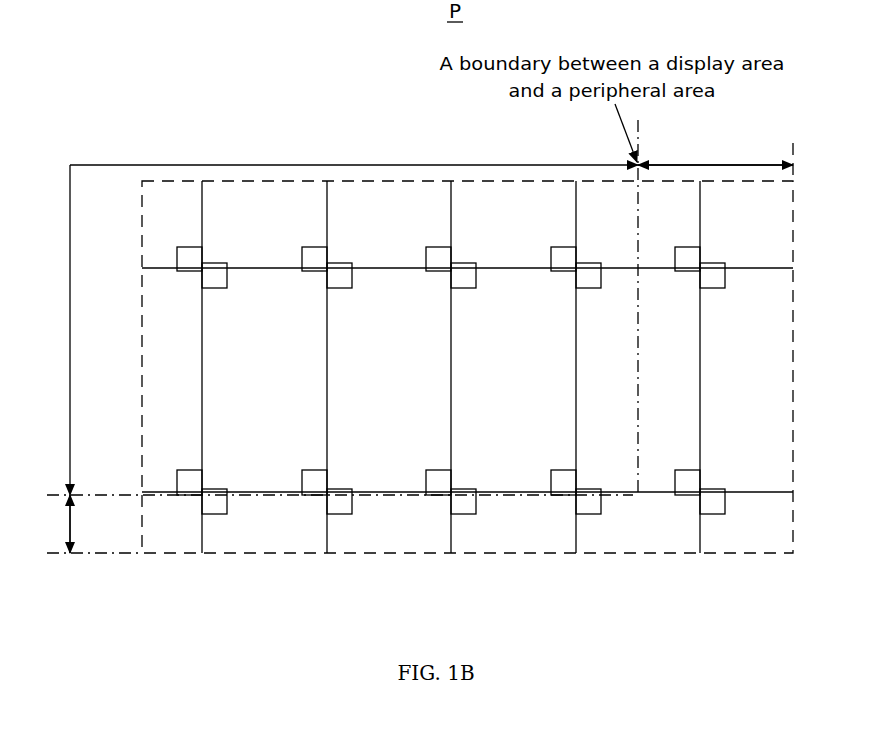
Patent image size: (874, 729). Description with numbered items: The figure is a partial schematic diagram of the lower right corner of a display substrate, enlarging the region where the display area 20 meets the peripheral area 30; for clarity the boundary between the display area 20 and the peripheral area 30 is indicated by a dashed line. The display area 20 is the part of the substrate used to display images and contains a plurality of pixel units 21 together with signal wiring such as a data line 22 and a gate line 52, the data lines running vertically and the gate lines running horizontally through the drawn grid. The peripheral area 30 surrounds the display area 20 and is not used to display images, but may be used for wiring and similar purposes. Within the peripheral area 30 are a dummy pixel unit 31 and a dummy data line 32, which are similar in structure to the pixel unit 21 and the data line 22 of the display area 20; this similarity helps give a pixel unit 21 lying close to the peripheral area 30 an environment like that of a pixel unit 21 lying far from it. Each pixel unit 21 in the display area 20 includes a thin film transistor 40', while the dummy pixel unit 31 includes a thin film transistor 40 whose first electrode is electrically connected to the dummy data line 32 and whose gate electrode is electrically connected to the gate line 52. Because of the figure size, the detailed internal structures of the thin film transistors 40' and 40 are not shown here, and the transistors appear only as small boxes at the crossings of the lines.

The display area 20 is at (338, 324).
The pixel unit 21 is at (282, 339).
The data line 22 is at (202, 228).
The peripheral area 30 is at (413, 336).
The dummy pixel unit 31 is at (745, 407).
The dummy data line 32 is at (700, 347).
The thin film transistor 40 is at (756, 380).
The thin film transistor 40' is at (346, 380).
The gate line 52 is at (762, 268).